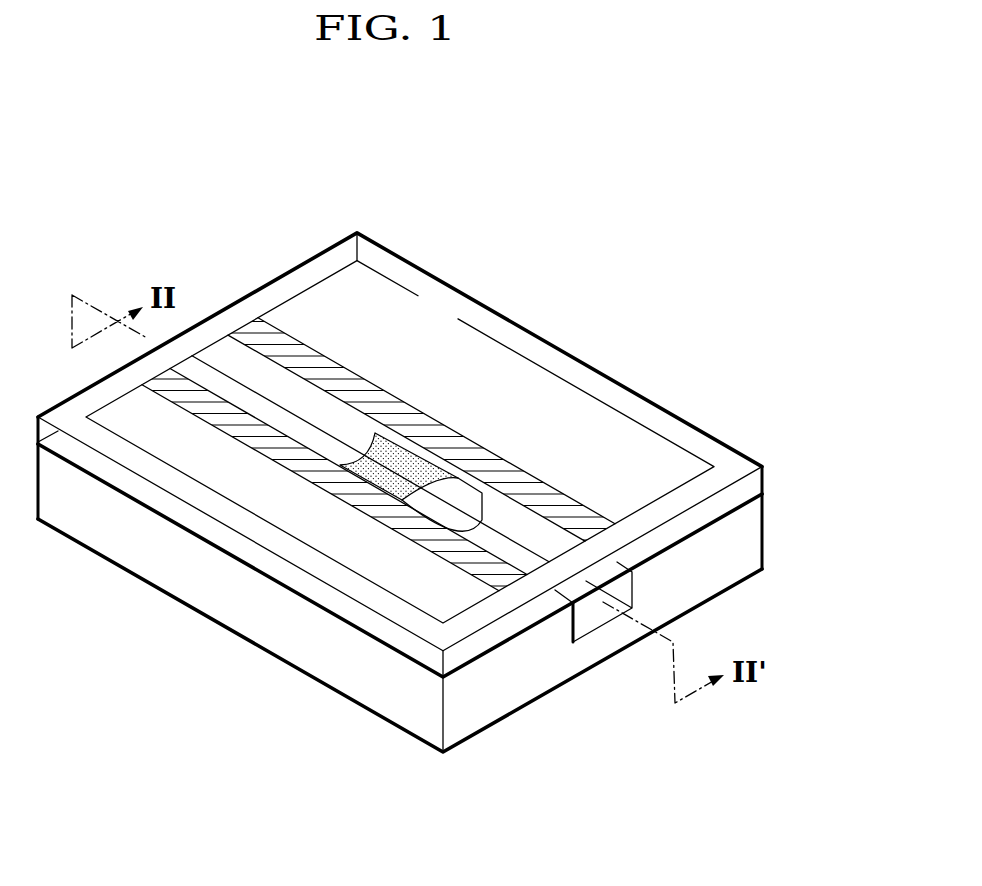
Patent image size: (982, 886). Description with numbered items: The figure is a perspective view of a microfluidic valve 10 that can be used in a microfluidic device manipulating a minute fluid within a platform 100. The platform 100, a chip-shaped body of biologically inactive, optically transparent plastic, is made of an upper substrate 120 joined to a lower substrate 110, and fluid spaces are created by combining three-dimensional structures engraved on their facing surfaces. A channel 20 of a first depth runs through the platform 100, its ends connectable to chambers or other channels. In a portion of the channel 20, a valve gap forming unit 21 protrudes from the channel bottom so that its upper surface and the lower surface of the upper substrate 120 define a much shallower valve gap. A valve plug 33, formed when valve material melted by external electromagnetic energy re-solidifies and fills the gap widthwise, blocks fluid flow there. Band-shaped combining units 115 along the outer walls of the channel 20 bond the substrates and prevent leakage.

The microfluidic valve 10 is at (476, 485).
The channel 20 is at (588, 614).
The valve gap forming unit 21 is at (453, 497).
The valve plug 33 is at (418, 458).
The platform 100 is at (476, 492).
The lower substrate 110 is at (760, 537).
The combining unit 115 is at (208, 405).
The upper substrate 120 is at (760, 480).